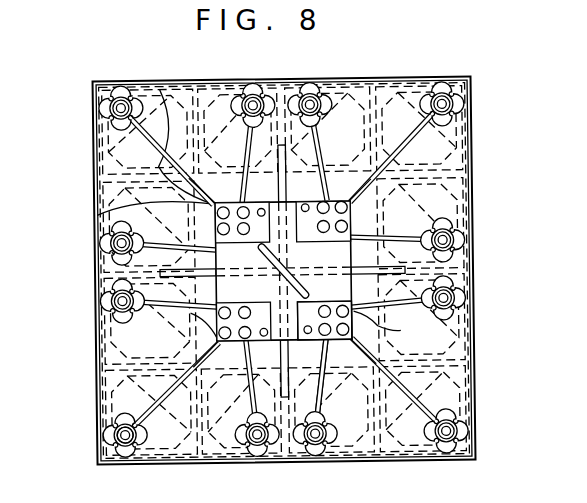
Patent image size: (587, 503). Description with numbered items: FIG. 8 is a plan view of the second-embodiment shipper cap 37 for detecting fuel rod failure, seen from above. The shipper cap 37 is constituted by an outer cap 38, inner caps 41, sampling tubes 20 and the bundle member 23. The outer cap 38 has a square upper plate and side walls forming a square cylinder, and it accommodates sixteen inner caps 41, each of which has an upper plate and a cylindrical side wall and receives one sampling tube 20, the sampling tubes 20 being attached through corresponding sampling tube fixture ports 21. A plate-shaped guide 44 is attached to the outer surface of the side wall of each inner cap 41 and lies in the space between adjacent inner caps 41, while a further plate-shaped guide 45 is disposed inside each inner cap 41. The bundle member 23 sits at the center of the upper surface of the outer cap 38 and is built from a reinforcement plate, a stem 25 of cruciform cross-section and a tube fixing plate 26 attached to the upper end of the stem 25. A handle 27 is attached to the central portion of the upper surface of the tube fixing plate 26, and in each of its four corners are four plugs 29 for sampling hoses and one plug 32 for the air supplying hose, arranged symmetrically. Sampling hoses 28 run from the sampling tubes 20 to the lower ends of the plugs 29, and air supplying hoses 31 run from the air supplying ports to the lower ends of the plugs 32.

The sampling tube 20 is at (125, 442).
The sampling tube fixture port 21 is at (105, 437).
The bundle member 23 is at (100, 213).
The stem 25 is at (310, 394).
The tube fixing plate 26 is at (385, 314).
The handle 27 is at (353, 290).
The sampling hose 28 is at (153, 147).
The plug for sampling hoses 29 is at (200, 316).
The air supplying hose 31 is at (216, 162).
The plug for the air supplying hose 32 is at (233, 392).
The shipper cap 37 is at (475, 160).
The outer cap 38 is at (104, 113).
The inner cap 41 is at (106, 372).
The plate-shaped guide 44 is at (150, 178).
The plate-shaped guide 45 is at (370, 450).